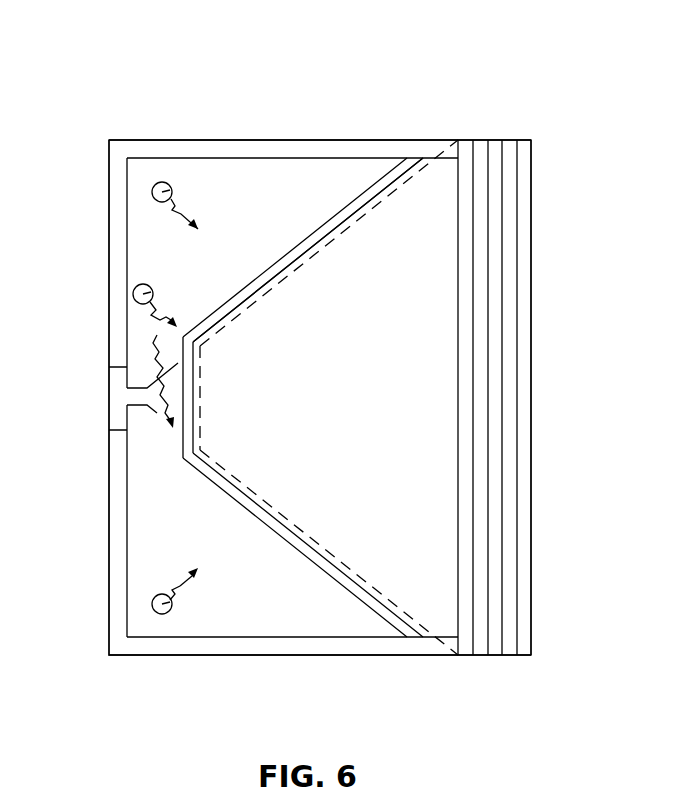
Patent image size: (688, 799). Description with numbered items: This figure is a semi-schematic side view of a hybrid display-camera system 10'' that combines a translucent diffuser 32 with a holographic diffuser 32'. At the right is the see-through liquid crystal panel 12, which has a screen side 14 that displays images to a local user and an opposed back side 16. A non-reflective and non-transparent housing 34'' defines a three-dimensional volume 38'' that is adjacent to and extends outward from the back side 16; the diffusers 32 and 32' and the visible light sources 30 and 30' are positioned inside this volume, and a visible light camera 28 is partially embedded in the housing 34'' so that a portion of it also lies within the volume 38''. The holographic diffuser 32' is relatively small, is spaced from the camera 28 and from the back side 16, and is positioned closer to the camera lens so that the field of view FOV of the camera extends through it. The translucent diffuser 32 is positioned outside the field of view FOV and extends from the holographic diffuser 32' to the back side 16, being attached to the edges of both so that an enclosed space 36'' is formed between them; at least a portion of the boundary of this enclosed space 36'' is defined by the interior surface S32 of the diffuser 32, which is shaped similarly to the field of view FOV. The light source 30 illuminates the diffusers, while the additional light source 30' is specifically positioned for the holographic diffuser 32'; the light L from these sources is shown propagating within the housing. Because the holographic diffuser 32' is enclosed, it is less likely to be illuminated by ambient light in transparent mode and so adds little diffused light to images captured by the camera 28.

The hybrid display-camera system 10'' is at (303, 336).
The see-through screen 12 is at (536, 132).
The screen side 14 is at (532, 587).
The back side 16 is at (458, 497).
The visible light camera 28 is at (118, 397).
The light source 30 is at (120, 401).
The additional light source 30' is at (107, 342).
The translucent diffuser 32 is at (303, 403).
The holographic diffuser 32' is at (239, 397).
The interior surface of the diffuser S32 is at (360, 220).
The non-reflective and non-transparent housing 34'' is at (320, 436).
The enclosed space 36'' is at (376, 419).
The three-dimensional volume 38'' is at (292, 397).
The field of view FOV is at (327, 250).
The light L is at (186, 212).